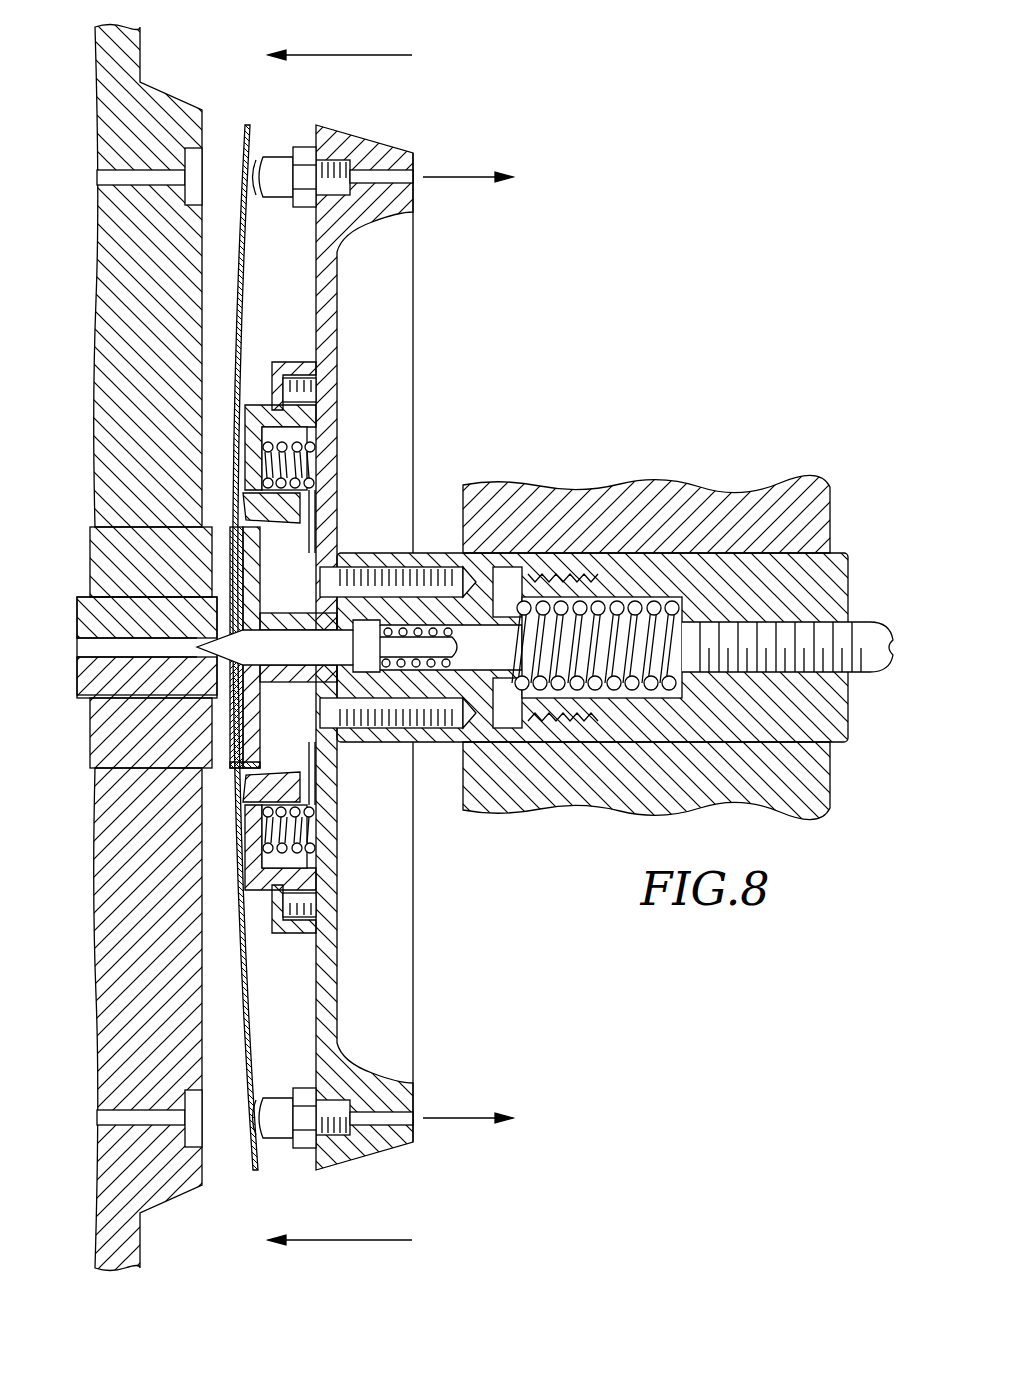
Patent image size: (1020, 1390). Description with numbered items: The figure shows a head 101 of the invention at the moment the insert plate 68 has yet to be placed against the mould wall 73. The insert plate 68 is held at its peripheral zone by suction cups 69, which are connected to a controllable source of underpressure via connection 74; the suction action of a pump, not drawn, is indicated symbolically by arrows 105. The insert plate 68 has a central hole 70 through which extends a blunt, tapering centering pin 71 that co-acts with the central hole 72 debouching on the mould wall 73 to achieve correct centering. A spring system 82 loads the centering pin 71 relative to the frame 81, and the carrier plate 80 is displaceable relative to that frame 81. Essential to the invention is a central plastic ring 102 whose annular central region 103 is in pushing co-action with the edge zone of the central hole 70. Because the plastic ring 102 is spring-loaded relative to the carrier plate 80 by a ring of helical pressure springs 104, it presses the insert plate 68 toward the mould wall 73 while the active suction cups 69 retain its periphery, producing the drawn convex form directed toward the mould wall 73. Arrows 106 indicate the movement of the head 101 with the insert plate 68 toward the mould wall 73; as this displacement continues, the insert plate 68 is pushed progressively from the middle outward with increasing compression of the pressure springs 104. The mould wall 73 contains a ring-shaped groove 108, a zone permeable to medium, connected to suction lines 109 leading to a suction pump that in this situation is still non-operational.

The insert plate 68 is at (250, 1162).
The suction cups 69 is at (278, 160).
The central hole 70 is at (230, 712).
The centering pin 71 is at (204, 660).
The hole 72 is at (82, 618).
The mould wall 73 is at (204, 112).
The connection 74 is at (404, 162).
The carrier plate 80 is at (358, 140).
The frame 81 is at (508, 497).
The spring system 82 is at (645, 690).
The head 101 is at (540, 205).
The plastic ring 102 is at (238, 780).
The annular central region 103 is at (232, 768).
The helical pressure springs 104 is at (314, 468).
The arrows 105 is at (454, 176).
The arrows 106 is at (346, 54).
The groove 108 is at (195, 180).
The suction lines 109 is at (140, 177).